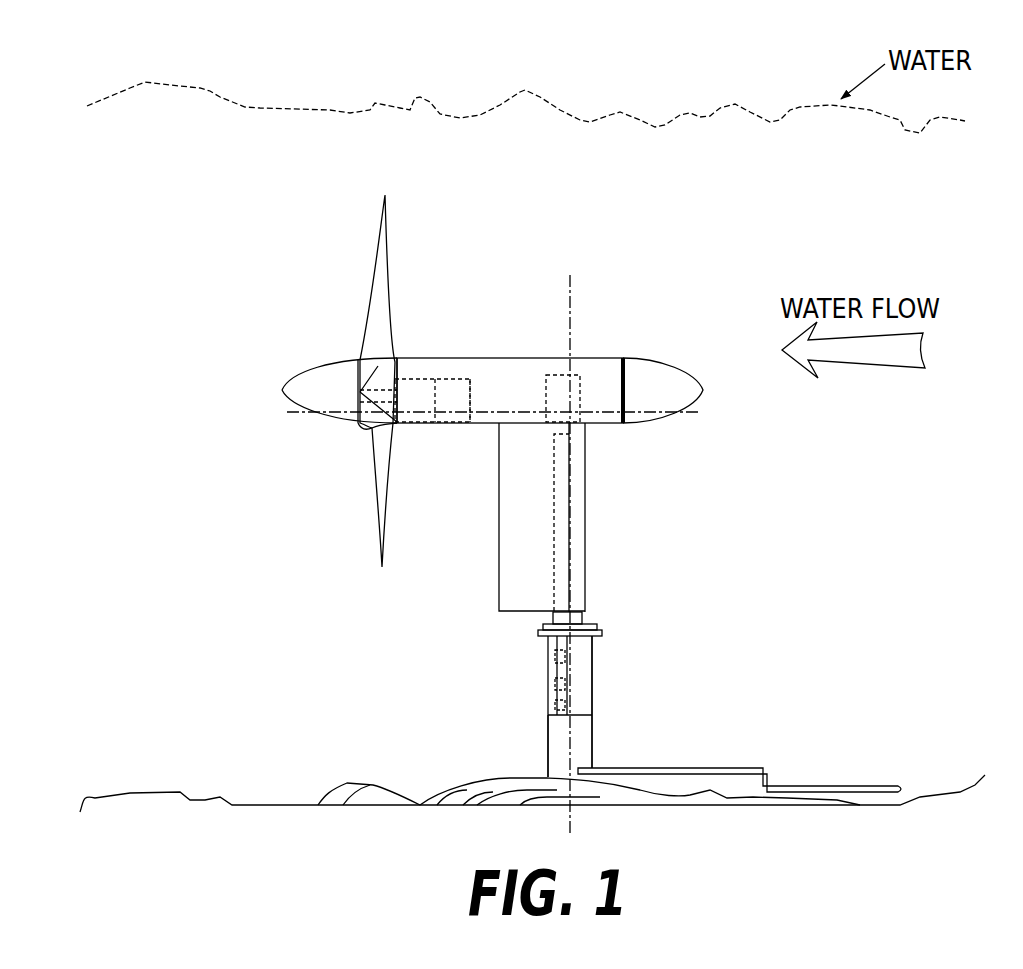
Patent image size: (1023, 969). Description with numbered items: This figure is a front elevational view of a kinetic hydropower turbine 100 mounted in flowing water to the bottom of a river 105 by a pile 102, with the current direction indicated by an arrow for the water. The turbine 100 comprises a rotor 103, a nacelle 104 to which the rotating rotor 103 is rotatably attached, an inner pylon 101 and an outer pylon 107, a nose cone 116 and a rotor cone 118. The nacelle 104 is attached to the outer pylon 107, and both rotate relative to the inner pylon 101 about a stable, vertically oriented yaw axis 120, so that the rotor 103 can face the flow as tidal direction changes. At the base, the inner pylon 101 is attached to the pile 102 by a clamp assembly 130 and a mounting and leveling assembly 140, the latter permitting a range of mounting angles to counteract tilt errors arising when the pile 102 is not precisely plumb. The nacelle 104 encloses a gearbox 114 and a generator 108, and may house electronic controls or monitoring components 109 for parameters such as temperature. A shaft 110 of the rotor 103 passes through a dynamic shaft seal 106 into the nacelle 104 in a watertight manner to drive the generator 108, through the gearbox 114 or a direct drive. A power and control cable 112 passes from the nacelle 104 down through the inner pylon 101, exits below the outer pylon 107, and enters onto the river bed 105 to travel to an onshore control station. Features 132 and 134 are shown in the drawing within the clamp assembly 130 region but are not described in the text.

The turbine 100 is at (575, 239).
The inner pylon 101 is at (586, 612).
The pile 102 is at (592, 748).
The rotor 103 is at (373, 314).
The nacelle 104 is at (595, 357).
The river bottom 105 is at (385, 790).
The dynamic shaft seal 106 is at (360, 390).
The outer pylon 107 is at (499, 545).
The generator 108 is at (470, 380).
The monitoring components 109 is at (582, 400).
The shaft 110 is at (405, 427).
The power and control cable 112 is at (764, 767).
The gearbox 114 is at (430, 380).
The nose cone 116 is at (668, 377).
The rotor cone 118 is at (280, 392).
The yaw axis 120 is at (573, 301).
The clamp assembly 130 is at (597, 656).
The column 132 is at (582, 693).
The fasteners 134 is at (558, 670).
The mounting and leveling assembly 140 is at (536, 636).